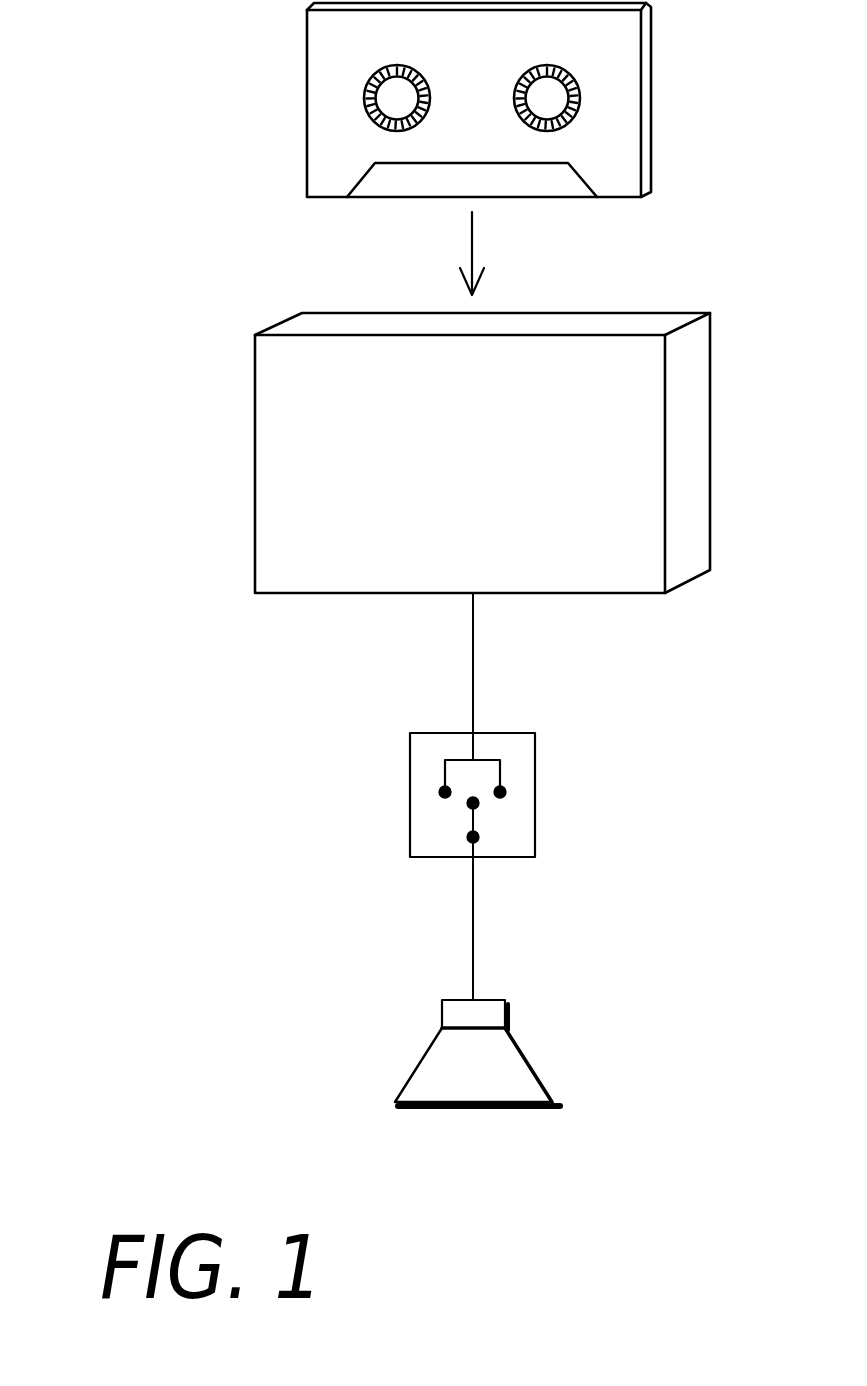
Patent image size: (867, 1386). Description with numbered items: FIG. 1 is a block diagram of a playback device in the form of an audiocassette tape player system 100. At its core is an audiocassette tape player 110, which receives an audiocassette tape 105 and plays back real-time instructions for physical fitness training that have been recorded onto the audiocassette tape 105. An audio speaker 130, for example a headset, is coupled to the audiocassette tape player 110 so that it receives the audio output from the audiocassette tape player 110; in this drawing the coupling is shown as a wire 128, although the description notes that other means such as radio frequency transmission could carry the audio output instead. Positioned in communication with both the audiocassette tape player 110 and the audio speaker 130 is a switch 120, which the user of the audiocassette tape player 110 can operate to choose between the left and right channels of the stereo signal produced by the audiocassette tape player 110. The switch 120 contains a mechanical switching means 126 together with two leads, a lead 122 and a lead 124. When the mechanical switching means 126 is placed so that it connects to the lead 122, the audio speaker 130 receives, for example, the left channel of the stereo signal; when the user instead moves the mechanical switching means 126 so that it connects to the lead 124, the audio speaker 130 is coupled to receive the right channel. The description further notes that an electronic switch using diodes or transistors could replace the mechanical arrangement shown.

The audiocassette tape player system 100 is at (115, 122).
The audiocassette tape 105 is at (647, 65).
The audiocassette tape player 110 is at (637, 567).
The switch 120 is at (537, 737).
The lead 122 is at (441, 792).
The lead 124 is at (506, 789).
The mechanical switching means 126 is at (477, 818).
The wire 128 is at (473, 960).
The audio speaker 130 is at (498, 1078).